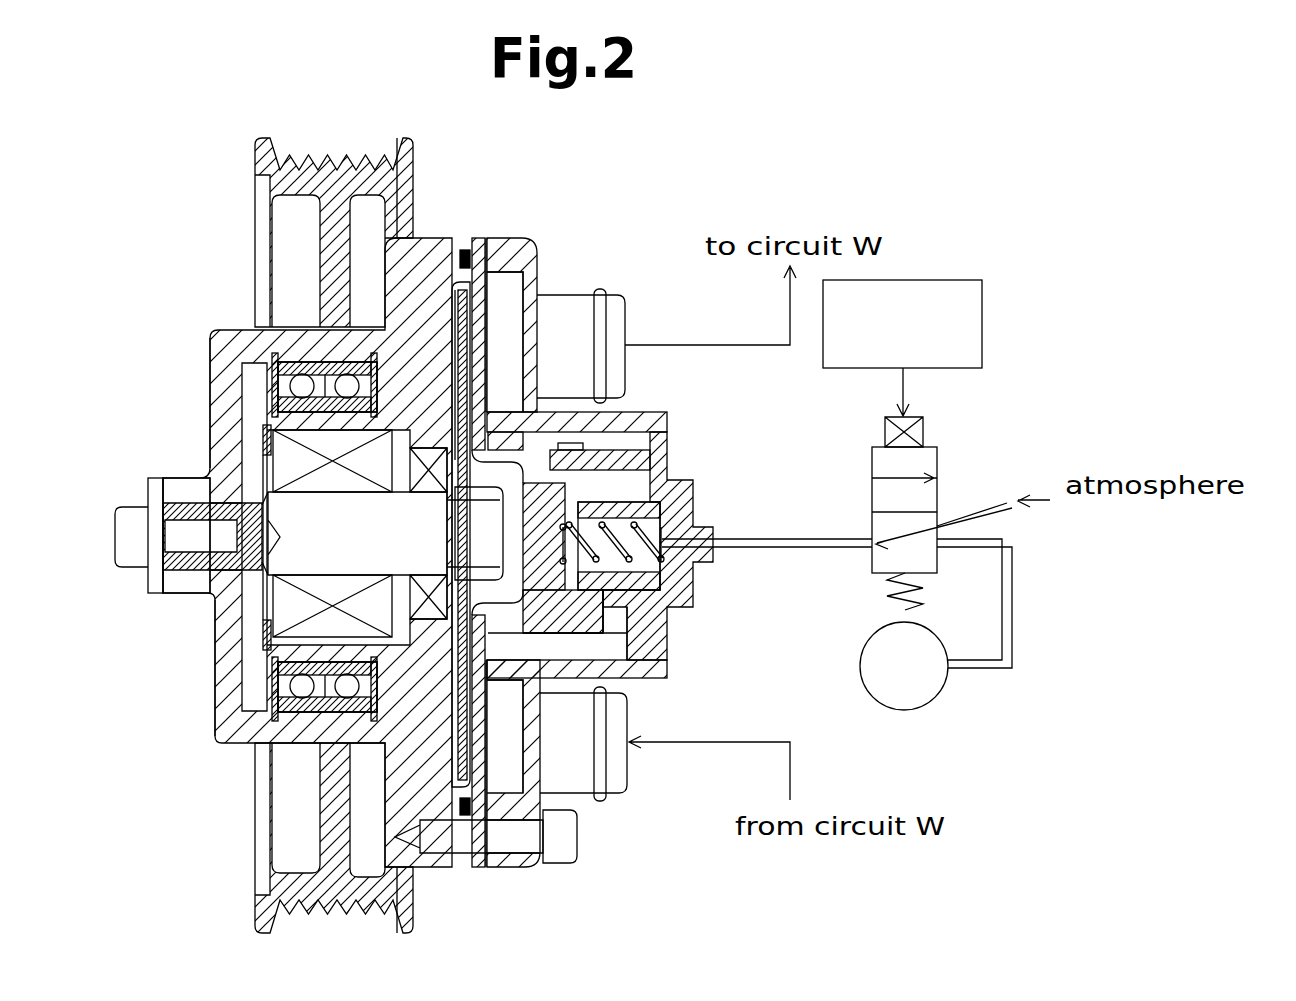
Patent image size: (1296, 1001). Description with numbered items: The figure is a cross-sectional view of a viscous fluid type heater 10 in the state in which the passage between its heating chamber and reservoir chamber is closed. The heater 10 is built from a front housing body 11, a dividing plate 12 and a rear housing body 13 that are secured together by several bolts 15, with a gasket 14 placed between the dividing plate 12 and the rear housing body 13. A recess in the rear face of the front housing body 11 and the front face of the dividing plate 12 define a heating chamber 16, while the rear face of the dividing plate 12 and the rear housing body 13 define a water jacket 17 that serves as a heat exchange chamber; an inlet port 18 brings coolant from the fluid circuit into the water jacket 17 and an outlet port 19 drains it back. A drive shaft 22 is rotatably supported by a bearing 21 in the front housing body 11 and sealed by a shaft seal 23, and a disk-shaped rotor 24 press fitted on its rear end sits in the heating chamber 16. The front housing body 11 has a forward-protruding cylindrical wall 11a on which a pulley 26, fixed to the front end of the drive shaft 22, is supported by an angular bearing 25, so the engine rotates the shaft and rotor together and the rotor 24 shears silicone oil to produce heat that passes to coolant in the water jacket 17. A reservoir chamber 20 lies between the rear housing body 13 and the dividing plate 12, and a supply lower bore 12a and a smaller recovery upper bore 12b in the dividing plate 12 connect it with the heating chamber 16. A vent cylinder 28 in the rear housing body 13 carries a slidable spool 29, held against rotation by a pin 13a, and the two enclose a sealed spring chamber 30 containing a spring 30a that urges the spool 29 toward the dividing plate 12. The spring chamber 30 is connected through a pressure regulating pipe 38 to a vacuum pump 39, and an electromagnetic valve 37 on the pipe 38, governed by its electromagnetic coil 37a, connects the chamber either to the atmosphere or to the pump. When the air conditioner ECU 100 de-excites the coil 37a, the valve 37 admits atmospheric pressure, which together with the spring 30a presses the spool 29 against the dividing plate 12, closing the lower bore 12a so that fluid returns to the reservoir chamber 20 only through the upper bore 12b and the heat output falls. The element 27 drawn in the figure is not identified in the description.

The viscous fluid type heater 10 is at (625, 195).
The front housing body 11 is at (435, 242).
The cylindrical wall 11a is at (245, 392).
The dividing plate 12 is at (479, 238).
The supply lower bore 12a is at (456, 568).
The recovery upper bore 12b is at (449, 520).
The rear housing body 13 is at (528, 245).
The pin 13a is at (612, 452).
The gasket 14 is at (490, 240).
The bolt 15 is at (562, 848).
The heating chamber 16 is at (462, 268).
The water jacket 17 is at (507, 293).
The inlet port 18 is at (620, 780).
The outlet port 19 is at (614, 300).
The reservoir chamber 20 is at (622, 655).
The bearing 21 is at (262, 462).
The drive shaft 22 is at (193, 507).
The shaft seal 23 is at (423, 448).
The rotor 24 is at (452, 292).
The angular bearing 25 is at (268, 360).
The pulley 26 is at (262, 190).
The flange 27 is at (135, 510).
The vent cylinder 28 is at (672, 480).
The spool 29 is at (602, 612).
The spring chamber 30 is at (652, 520).
The spring 30a is at (652, 568).
The electromagnetic valve 37 is at (938, 466).
The electromagnetic coil 37a is at (925, 433).
The pressure regulating pipe 38 is at (812, 538).
The vacuum pump 39 is at (935, 704).
The air conditioner ECU 100 is at (982, 318).